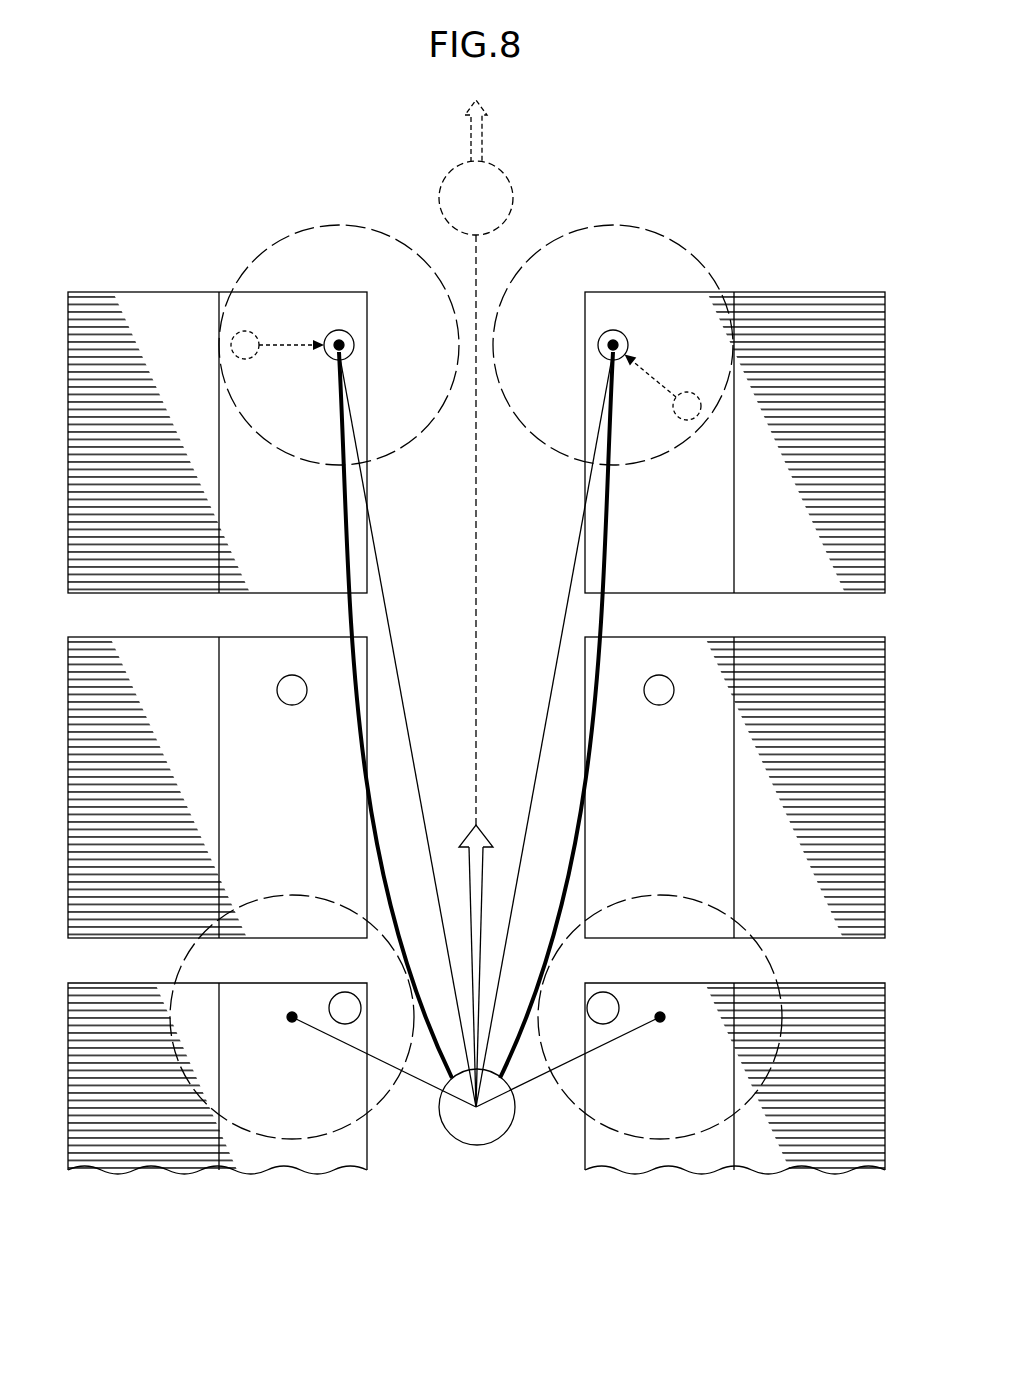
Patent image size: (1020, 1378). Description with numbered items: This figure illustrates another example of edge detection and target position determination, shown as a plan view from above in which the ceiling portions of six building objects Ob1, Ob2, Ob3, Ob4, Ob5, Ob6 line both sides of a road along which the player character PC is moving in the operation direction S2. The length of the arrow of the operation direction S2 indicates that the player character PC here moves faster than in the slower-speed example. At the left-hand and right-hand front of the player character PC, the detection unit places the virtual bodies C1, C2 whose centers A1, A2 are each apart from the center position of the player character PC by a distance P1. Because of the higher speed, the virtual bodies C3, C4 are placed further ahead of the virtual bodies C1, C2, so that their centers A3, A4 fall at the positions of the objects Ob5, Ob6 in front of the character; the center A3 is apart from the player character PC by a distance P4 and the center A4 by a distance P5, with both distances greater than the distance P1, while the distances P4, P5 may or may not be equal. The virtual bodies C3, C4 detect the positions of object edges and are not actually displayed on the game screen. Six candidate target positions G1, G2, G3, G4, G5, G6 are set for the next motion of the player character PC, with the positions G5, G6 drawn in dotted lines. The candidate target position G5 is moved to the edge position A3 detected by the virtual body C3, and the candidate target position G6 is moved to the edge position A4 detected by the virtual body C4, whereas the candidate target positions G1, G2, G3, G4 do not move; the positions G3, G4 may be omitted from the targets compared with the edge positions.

The object Ob1 is at (134, 983).
The object Ob2 is at (818, 983).
The object Ob3 is at (134, 637).
The object Ob4 is at (818, 637).
The object Ob5 is at (134, 292).
The object Ob6 is at (818, 292).
The virtual body C1 is at (182, 968).
The virtual body C2 is at (771, 968).
The virtual body C3 is at (264, 253).
The virtual body C4 is at (688, 253).
The center position A1 is at (291, 1012).
The center position A2 is at (661, 1012).
The center position A3 is at (339, 330).
The center position A4 is at (613, 330).
The candidate target position G1 is at (345, 1008).
The candidate target position G2 is at (603, 1008).
The candidate target position G3 is at (292, 690).
The candidate target position G4 is at (659, 690).
The candidate target position G5 is at (310, 345).
The candidate target position G6 is at (633, 375).
The distance P1 is at (423, 1082).
The distance P4 is at (400, 667).
The distance P5 is at (553, 667).
The operation direction S2 is at (480, 824).
The player character PC is at (477, 622).